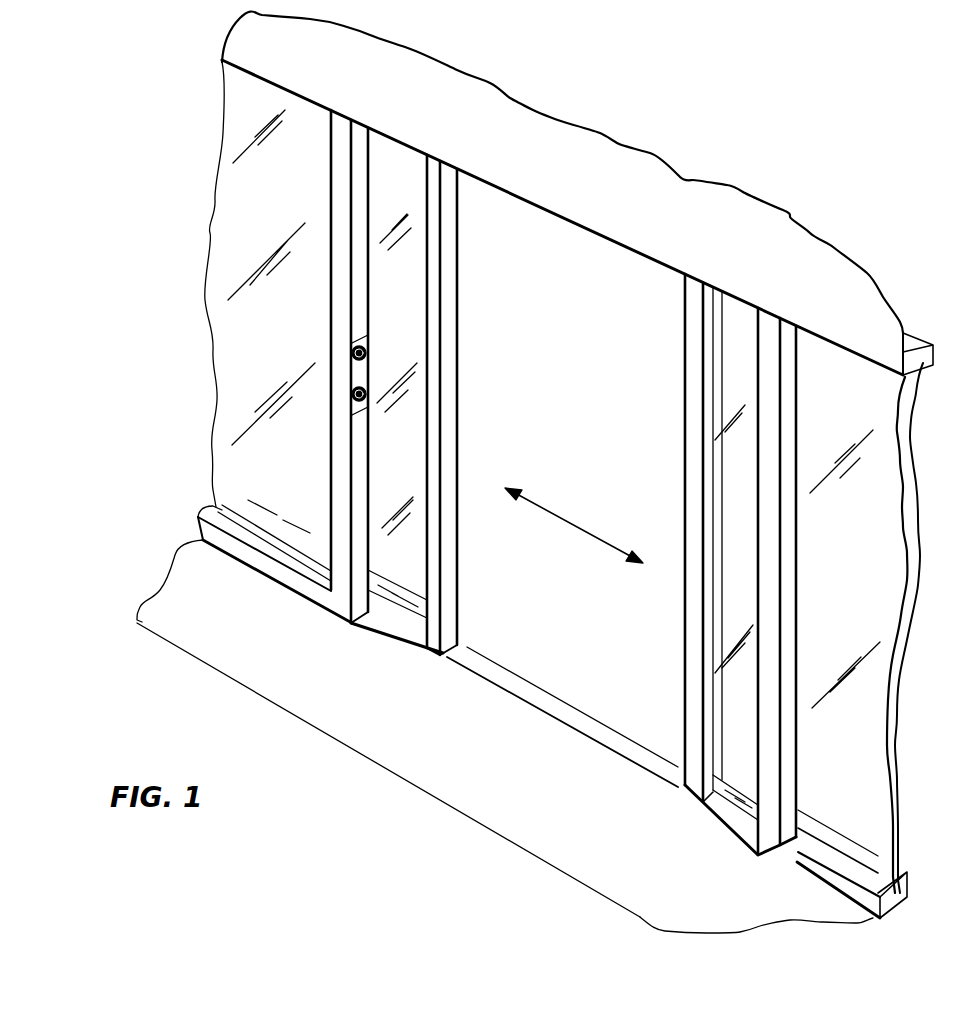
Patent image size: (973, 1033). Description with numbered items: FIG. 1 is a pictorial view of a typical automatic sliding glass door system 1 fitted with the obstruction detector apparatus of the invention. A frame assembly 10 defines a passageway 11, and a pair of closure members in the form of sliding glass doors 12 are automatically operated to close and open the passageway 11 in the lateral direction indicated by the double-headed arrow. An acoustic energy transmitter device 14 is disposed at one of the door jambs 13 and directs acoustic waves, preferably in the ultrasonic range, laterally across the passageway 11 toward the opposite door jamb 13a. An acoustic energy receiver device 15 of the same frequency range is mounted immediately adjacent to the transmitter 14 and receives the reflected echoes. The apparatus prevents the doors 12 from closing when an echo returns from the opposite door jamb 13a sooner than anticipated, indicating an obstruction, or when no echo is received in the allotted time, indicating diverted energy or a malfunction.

The sliding door assembly 1 is at (320, 408).
The frame assembly 10 is at (694, 205).
The passageway 11 is at (591, 457).
The closure members 12 is at (456, 213).
The door jamb 13 is at (358, 266).
The opposite door jamb 13a is at (756, 613).
The acoustic energy transmitter device 14 is at (368, 346).
The acoustic energy receiver device 15 is at (368, 405).